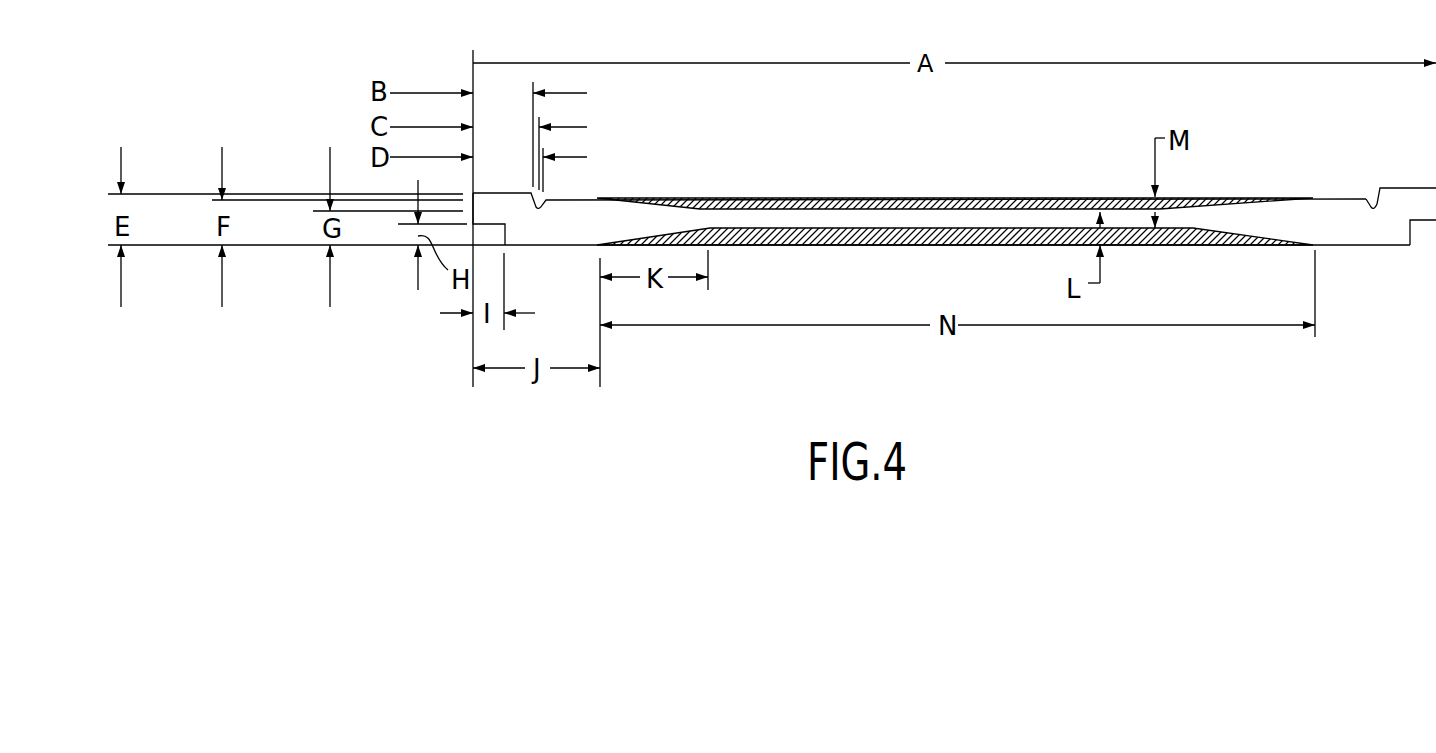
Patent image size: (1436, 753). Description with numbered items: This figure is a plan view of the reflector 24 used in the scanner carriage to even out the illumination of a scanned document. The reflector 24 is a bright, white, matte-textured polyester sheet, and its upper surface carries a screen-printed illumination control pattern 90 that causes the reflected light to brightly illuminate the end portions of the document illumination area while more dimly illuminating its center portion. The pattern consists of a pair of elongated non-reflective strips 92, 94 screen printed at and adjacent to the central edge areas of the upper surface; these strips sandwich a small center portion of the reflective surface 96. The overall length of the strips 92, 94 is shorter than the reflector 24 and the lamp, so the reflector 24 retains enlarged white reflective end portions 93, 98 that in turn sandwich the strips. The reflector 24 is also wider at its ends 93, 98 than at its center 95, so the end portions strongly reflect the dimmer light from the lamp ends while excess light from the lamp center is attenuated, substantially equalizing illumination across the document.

The reflector 24 is at (508, 416).
The illumination control pattern 90 is at (986, 270).
The elongated non-reflective strip 92 is at (867, 238).
The reflective surface end portion 93 is at (517, 221).
The elongated non-reflective strip 94 is at (811, 198).
The center of the reflector 95 is at (1008, 153).
The center portion of the reflective surface 96 is at (932, 228).
The reflective surface end portion 98 is at (1373, 230).